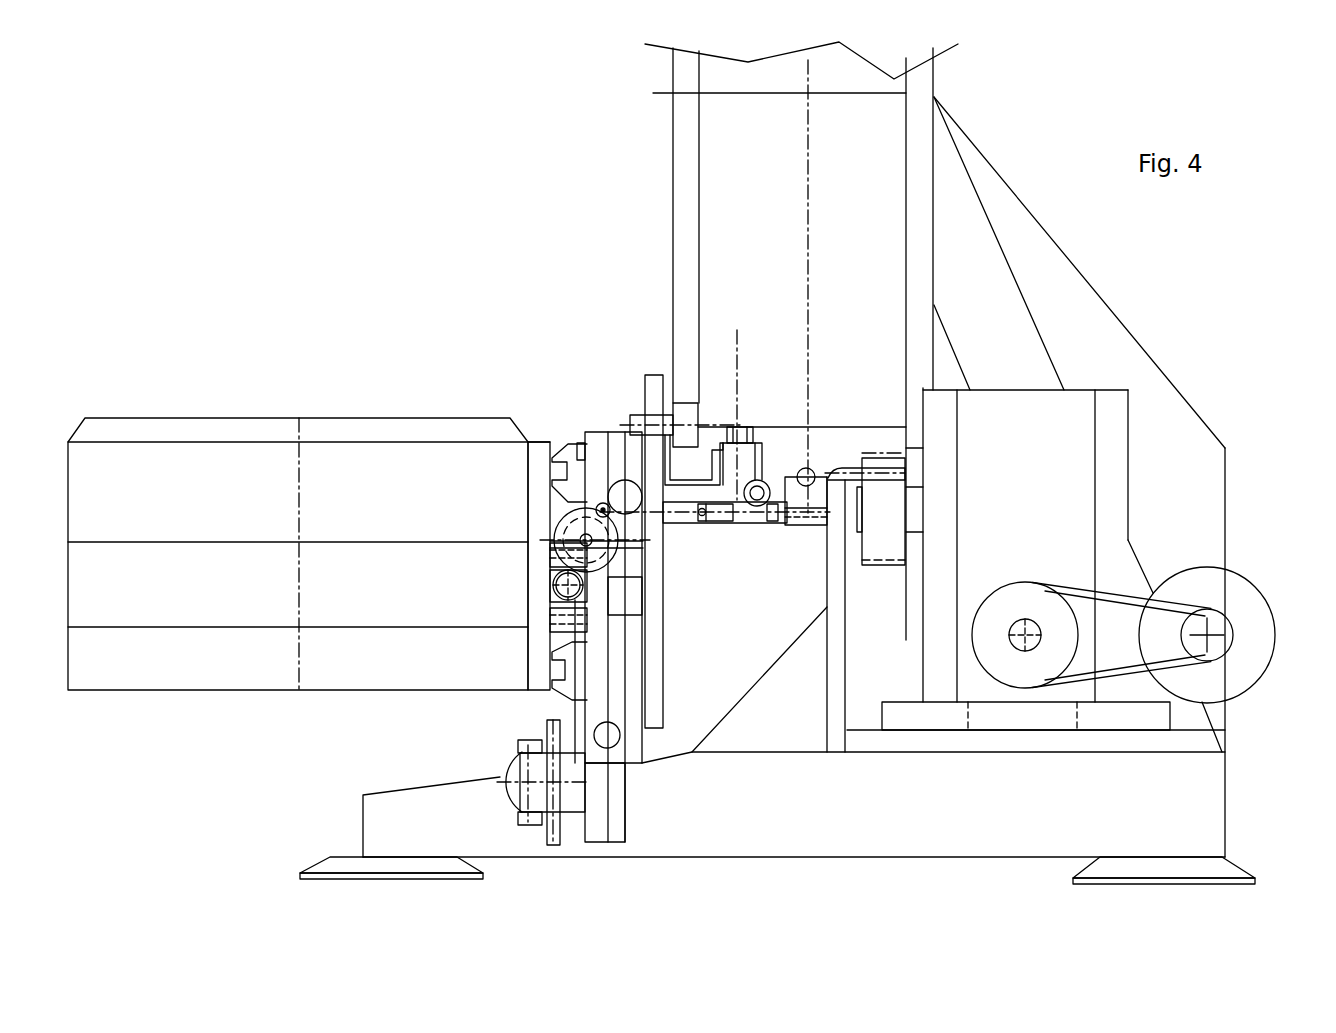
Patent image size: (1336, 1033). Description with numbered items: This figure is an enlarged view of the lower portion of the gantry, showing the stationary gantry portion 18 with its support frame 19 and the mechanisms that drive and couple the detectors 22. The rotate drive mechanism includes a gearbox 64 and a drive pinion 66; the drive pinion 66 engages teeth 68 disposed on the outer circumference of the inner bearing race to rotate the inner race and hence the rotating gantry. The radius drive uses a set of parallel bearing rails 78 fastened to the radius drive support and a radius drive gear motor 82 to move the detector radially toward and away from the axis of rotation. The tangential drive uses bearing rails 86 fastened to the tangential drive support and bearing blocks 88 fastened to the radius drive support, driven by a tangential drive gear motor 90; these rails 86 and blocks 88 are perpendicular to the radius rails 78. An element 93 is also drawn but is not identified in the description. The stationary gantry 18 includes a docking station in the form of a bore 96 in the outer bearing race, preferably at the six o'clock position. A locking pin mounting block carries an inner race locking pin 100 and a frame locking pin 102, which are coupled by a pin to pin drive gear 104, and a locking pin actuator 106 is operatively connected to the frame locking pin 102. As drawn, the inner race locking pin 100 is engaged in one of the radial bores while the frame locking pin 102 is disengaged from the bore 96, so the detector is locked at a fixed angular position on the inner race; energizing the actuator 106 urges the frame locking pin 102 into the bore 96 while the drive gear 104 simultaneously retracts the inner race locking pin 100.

The stationary gantry portion 18 is at (1107, 683).
The support frame 19 is at (1232, 590).
The detectors 22 is at (358, 460).
The gearbox 64 is at (1128, 390).
The drive pinion 66 is at (880, 548).
The teeth 68 is at (880, 450).
The bearing rails 78 is at (620, 597).
The radius drive gear motor 82 is at (530, 825).
The bearing rails 86 is at (557, 453).
The bearing blocks 88 is at (570, 447).
The tangential drive gear motor 90 is at (575, 528).
The vertical bar 93 is at (688, 443).
The bore 96 is at (823, 500).
The inner race locking pin 100 is at (738, 453).
The frame locking pin 102 is at (773, 523).
The pin to pin drive gear 104 is at (770, 480).
The locking pin actuator 106 is at (620, 437).